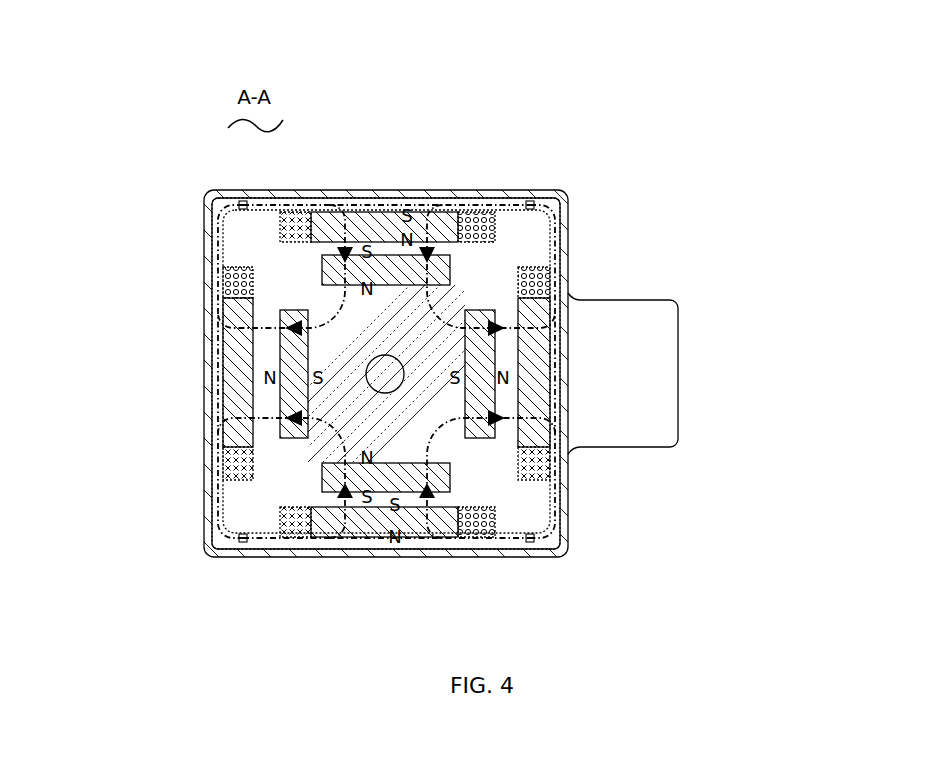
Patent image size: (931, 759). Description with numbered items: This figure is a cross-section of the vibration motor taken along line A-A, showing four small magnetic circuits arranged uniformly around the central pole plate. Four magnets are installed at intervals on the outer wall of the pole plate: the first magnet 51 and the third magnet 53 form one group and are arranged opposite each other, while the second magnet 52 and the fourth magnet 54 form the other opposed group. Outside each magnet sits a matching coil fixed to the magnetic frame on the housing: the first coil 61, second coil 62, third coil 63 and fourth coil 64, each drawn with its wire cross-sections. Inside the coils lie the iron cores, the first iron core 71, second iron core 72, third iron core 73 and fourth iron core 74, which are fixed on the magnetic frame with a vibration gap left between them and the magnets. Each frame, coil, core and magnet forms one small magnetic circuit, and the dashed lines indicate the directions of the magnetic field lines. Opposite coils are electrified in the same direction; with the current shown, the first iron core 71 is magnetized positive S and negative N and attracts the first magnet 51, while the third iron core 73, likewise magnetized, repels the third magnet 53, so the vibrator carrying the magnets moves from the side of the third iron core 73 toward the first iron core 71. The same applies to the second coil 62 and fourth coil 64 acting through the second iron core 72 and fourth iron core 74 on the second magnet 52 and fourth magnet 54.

The first magnet 51 is at (378, 248).
The second magnet 52 is at (478, 392).
The third magnet 53 is at (387, 485).
The fourth magnet 54 is at (290, 365).
The first coil 61 is at (479, 220).
The second coil 62 is at (537, 467).
The third coil 63 is at (300, 527).
The fourth coil 64 is at (233, 280).
The first iron core 71 is at (328, 222).
The second iron core 72 is at (533, 345).
The third iron core 73 is at (448, 532).
The fourth iron core 74 is at (235, 403).